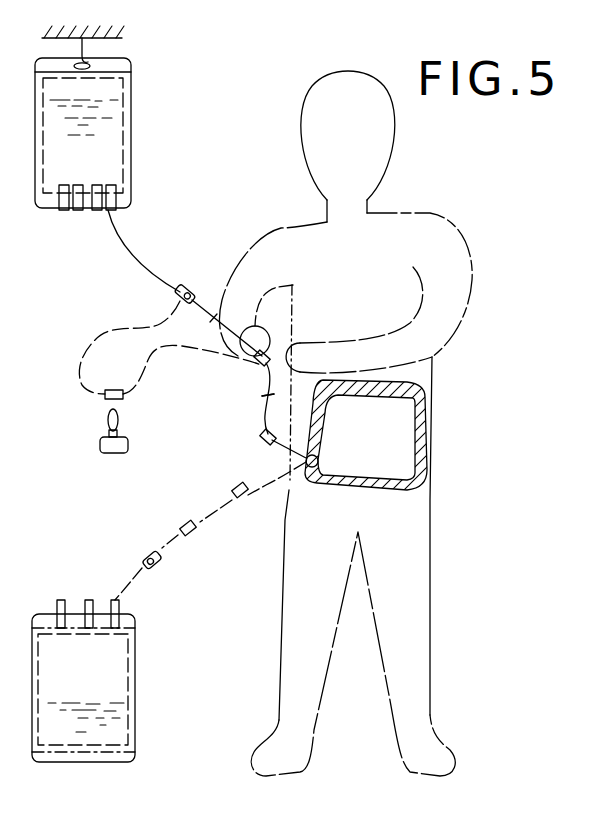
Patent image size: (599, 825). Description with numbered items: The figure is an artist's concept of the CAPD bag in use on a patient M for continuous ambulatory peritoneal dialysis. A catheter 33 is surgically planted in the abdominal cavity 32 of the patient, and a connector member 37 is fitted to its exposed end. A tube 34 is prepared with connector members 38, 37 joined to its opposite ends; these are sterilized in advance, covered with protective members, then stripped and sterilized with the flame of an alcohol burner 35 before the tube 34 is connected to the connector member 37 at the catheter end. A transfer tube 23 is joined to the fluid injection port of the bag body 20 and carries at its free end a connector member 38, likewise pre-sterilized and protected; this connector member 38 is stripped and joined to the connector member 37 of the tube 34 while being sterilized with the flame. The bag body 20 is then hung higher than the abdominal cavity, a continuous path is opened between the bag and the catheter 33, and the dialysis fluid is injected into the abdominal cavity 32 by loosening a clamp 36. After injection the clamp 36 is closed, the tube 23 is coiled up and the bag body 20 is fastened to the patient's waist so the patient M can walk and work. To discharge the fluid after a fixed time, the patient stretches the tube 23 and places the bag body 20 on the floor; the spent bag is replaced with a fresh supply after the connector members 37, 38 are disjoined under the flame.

The bag body 20 is at (131, 135).
The transfer tube 23 is at (122, 236).
The abdominal cavity 32 is at (410, 434).
The catheter 33 is at (304, 461).
The tube 34 is at (262, 410).
The alcohol burner 35 is at (114, 453).
The clamp 36 is at (176, 292).
The connector member 37 is at (262, 366).
The connector member 38 is at (226, 362).
The patient M is at (472, 280).